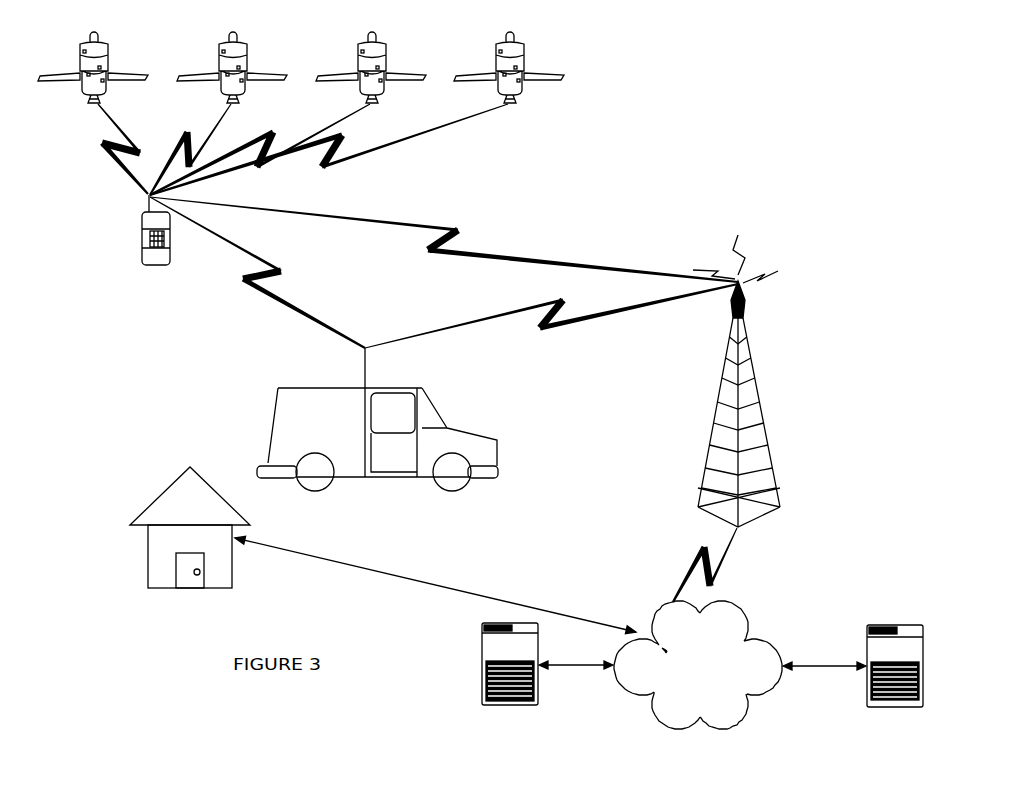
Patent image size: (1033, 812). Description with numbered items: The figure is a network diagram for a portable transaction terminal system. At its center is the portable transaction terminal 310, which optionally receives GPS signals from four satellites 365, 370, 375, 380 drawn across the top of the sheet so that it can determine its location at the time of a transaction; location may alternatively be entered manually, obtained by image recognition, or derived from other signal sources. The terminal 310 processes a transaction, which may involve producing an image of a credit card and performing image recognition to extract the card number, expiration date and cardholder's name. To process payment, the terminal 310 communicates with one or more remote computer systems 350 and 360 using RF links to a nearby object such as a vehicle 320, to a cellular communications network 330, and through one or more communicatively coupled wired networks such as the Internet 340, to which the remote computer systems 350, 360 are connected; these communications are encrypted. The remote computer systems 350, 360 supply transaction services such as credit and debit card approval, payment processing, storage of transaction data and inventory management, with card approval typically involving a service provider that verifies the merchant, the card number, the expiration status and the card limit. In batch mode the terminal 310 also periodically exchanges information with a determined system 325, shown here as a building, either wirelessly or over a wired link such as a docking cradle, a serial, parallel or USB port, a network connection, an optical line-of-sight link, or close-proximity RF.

The portable transaction terminal 310 is at (150, 258).
The vehicle 320 is at (365, 477).
The determined system 325 is at (148, 560).
The cellular communications network 330 is at (749, 372).
The Internet 340 is at (646, 613).
The remote computer system 350 is at (480, 655).
The remote computer system 360 is at (866, 628).
The satellite 365 is at (82, 93).
The satellite 370 is at (221, 95).
The satellite 375 is at (350, 88).
The satellite 380 is at (493, 87).